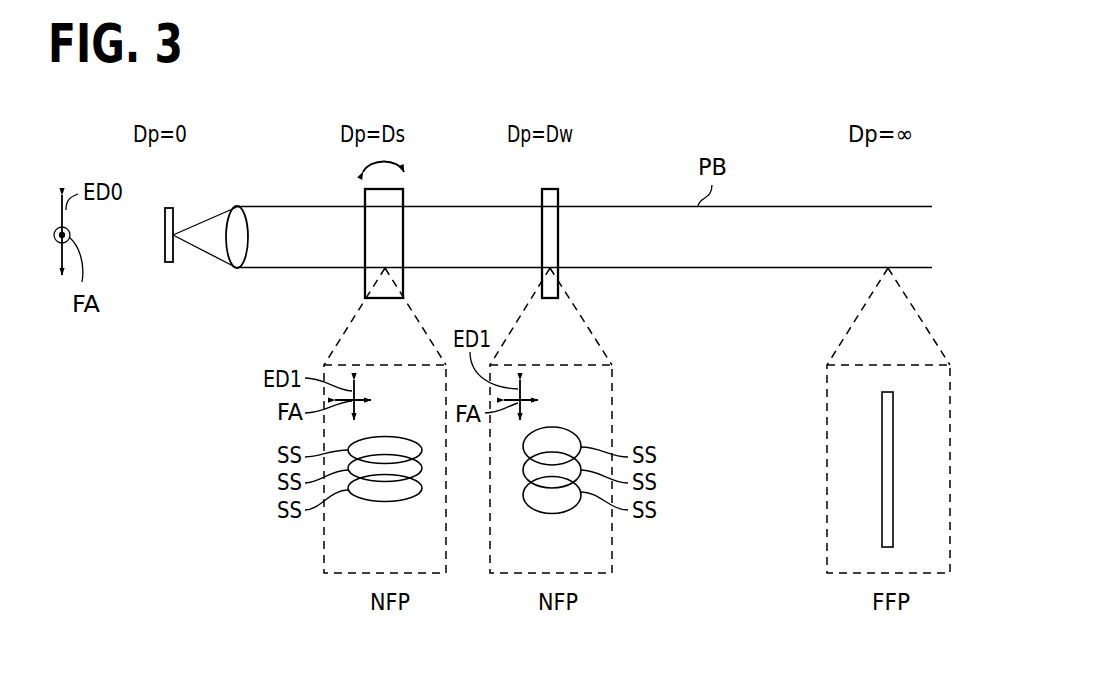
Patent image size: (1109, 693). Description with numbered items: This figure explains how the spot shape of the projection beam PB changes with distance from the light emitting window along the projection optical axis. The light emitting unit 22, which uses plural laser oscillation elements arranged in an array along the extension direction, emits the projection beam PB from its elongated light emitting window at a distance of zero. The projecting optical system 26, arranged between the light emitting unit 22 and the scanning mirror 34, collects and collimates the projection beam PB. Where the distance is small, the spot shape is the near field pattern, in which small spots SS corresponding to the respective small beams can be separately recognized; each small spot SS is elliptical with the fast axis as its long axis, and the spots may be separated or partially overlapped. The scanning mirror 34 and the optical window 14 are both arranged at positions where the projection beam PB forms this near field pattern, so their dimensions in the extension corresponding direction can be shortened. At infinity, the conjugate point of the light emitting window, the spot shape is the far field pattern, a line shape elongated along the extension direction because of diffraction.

The light emitting unit 22 is at (173, 262).
The projecting optical system 26 is at (237, 268).
The scanning mirror 34 is at (403, 197).
The optical window 14 is at (558, 197).
The projection beam PB is at (584, 237).
The small spot SS is at (464, 470).